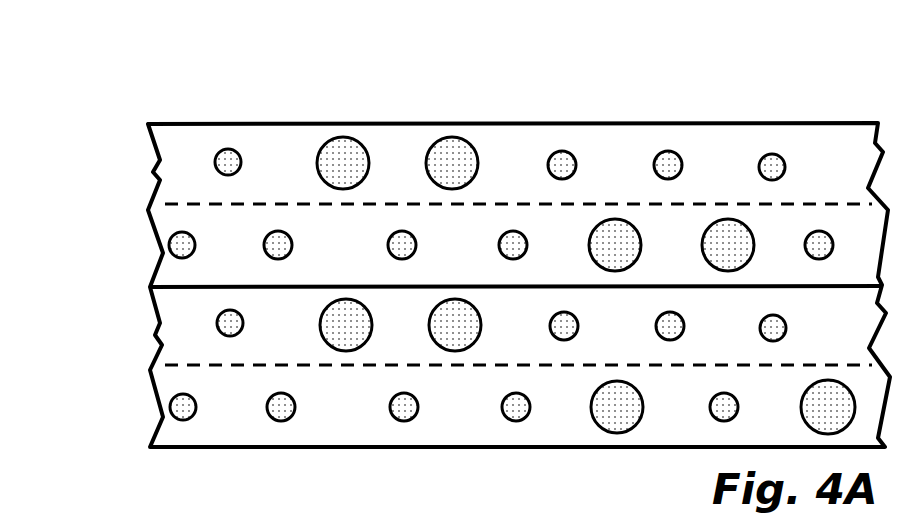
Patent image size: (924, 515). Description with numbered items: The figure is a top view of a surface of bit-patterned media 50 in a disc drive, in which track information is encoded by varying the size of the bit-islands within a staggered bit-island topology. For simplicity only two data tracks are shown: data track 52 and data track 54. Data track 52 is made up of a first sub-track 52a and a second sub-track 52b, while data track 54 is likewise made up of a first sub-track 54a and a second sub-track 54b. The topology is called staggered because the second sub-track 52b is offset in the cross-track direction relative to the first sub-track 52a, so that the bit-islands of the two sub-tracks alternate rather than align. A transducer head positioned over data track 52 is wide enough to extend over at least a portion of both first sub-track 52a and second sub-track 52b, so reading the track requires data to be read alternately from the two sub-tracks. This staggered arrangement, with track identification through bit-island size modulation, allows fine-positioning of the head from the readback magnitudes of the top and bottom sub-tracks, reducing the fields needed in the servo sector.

The bit-patterned media 50 is at (196, 98).
The data track 52 is at (88, 127).
The first sub-track 52a is at (140, 125).
The second sub-track 52b is at (140, 207).
The data track 54 is at (88, 290).
The first sub-track 54a is at (140, 290).
The second sub-track 54b is at (140, 367).